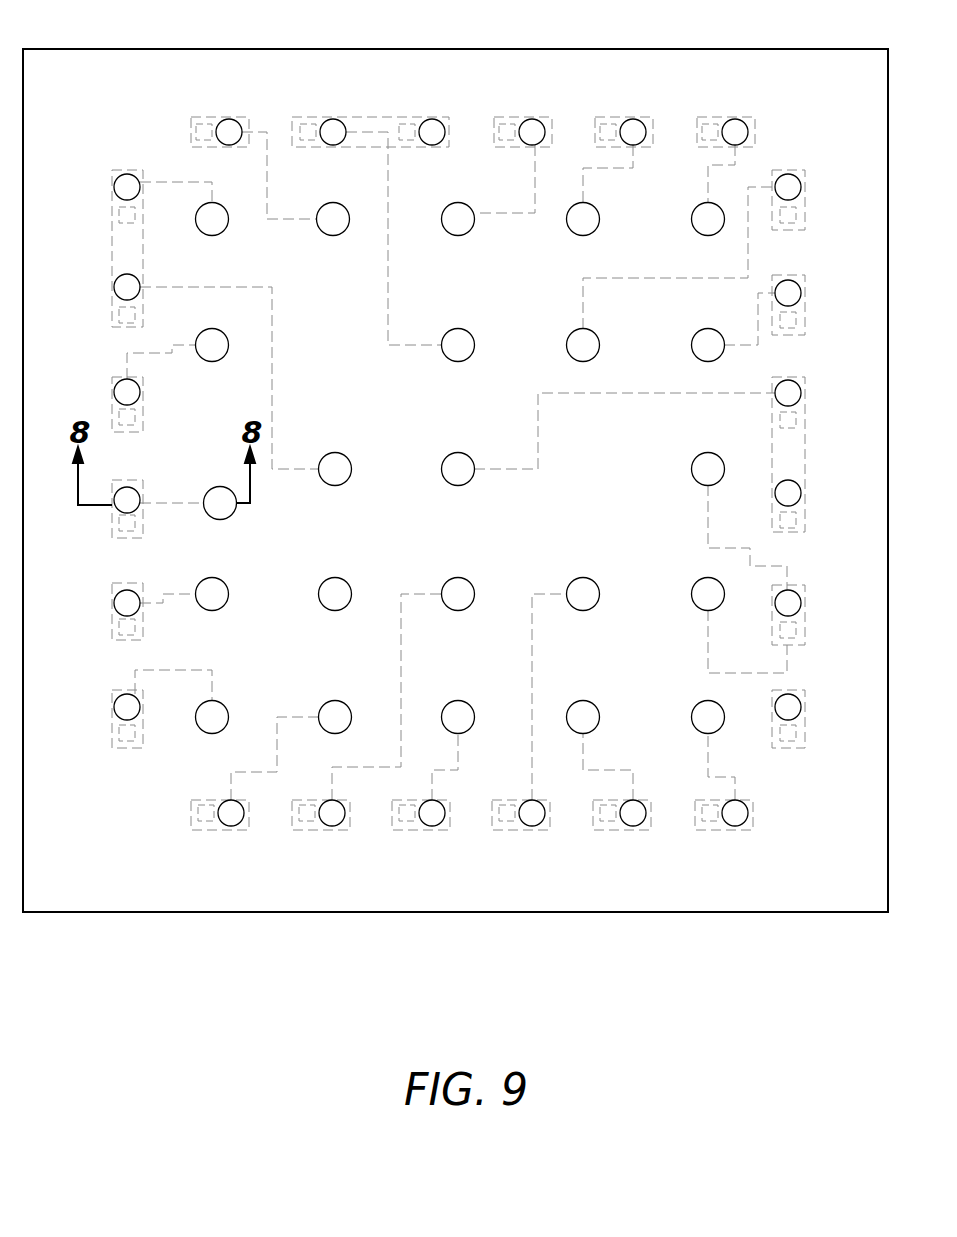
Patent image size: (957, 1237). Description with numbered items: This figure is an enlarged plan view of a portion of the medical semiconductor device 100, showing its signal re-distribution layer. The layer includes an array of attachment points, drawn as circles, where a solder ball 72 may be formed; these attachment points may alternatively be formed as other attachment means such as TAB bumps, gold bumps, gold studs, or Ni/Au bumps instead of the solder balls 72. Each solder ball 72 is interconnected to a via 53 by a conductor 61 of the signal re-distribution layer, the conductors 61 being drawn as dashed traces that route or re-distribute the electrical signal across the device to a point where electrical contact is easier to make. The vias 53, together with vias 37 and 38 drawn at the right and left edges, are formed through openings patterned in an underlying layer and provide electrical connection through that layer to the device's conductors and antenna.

The medical semiconductor device 100 is at (447, 997).
The via 53 is at (203, 127).
The conductor 61 is at (392, 330).
The solder ball 72 is at (445, 357).
The via 37 is at (794, 742).
The via 38 is at (115, 733).